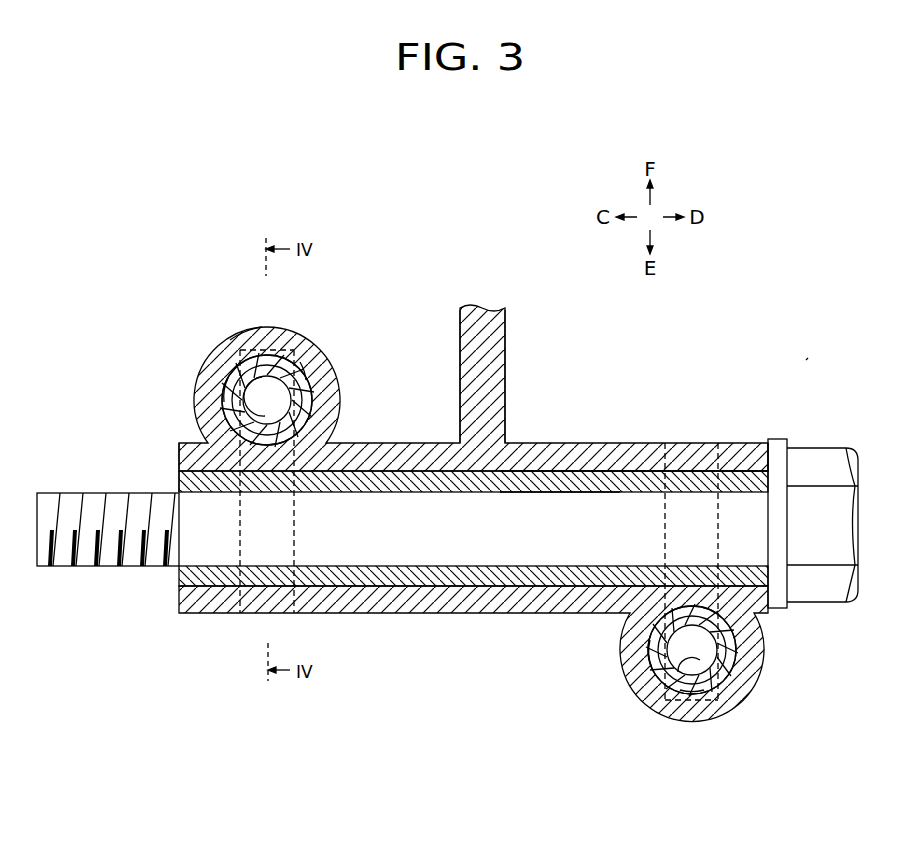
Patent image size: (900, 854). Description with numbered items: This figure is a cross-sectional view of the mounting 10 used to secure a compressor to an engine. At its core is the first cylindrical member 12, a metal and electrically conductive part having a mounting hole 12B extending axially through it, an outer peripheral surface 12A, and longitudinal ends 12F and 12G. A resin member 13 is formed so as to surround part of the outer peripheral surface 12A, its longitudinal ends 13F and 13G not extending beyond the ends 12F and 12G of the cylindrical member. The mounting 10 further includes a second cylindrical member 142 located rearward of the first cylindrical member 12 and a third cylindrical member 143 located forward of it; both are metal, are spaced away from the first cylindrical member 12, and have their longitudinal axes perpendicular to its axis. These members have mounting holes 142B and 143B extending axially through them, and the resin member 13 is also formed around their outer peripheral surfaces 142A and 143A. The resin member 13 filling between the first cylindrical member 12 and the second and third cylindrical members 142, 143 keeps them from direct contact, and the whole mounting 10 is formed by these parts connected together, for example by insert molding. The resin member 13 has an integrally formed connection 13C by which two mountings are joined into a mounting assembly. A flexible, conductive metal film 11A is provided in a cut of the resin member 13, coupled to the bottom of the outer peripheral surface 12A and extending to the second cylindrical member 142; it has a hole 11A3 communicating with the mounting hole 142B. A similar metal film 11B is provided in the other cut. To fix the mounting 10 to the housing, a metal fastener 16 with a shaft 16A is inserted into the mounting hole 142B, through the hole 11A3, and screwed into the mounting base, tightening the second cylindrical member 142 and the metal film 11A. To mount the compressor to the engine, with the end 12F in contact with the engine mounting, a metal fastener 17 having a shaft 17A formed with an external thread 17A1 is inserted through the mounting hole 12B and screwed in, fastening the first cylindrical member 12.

The mounting 10 is at (810, 360).
The metal film 11A is at (240, 504).
The hole 11A3 is at (250, 346).
The metal film 11B is at (718, 520).
The first cylindrical member 12 is at (628, 471).
The outer peripheral surface 12A is at (582, 471).
The mounting hole 12B is at (530, 500).
The longitudinal end 12F is at (179, 478).
The longitudinal end 12G is at (790, 470).
The resin member 13 is at (500, 613).
The connection 13C is at (460, 360).
The longitudinal end 13F is at (179, 455).
The longitudinal end 13G is at (770, 470).
The second cylindrical member 142 is at (230, 381).
The outer peripheral surface 142A is at (224, 404).
The mounting hole 142B is at (283, 385).
The third cylindrical member 143 is at (647, 644).
The outer peripheral surface 143A is at (648, 668).
The mounting hole 143B is at (692, 666).
The fastener 16 is at (296, 392).
The shaft 16A is at (300, 400).
The fastener 17 is at (838, 448).
The shaft 17A is at (680, 450).
The external thread 17A1 is at (118, 568).